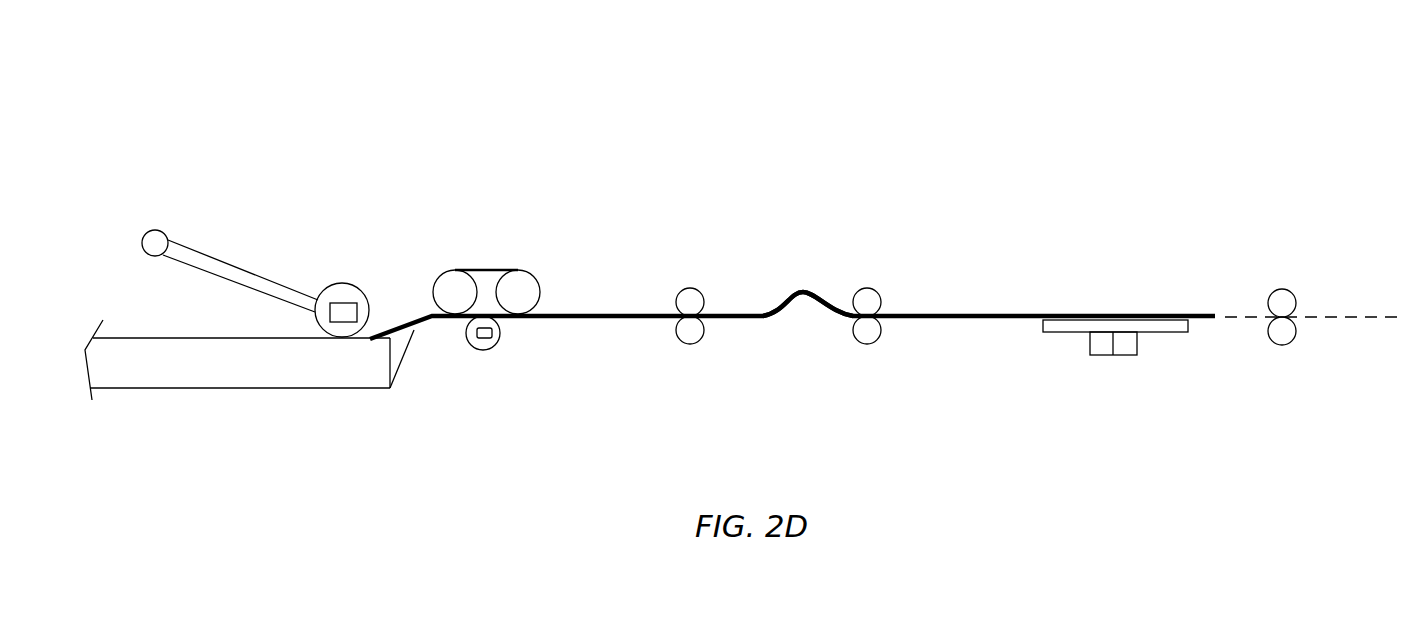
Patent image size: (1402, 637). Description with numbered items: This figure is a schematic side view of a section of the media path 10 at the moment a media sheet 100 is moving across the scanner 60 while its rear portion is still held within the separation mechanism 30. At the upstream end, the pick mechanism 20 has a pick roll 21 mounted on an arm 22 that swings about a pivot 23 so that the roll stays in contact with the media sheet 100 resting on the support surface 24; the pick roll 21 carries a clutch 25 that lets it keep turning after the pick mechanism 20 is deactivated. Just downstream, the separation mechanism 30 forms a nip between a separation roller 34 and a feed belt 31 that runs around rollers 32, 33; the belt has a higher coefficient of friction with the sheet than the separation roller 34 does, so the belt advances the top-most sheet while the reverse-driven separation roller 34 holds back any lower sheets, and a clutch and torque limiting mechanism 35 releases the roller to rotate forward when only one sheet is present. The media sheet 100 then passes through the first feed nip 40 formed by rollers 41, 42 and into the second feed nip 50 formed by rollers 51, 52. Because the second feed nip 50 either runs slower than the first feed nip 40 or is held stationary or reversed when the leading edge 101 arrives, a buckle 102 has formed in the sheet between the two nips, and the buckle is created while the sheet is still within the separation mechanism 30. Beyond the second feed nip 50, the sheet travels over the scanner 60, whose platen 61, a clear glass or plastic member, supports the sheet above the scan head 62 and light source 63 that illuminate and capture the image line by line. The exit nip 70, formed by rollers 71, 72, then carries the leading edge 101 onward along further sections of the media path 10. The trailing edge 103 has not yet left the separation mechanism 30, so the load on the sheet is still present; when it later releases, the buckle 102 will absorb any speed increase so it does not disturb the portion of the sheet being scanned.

The media path 10 is at (1048, 64).
The pick mechanism 20 is at (215, 155).
The pick roll 21 is at (333, 282).
The arm 22 is at (245, 270).
The pivot 23 is at (142, 235).
The support surface 24 is at (307, 388).
The clutch 25 is at (343, 303).
The separation mechanism 30 is at (506, 167).
The feed belt 31 is at (490, 270).
The roller 32 is at (458, 285).
The roller 33 is at (513, 288).
The separation roller 34 is at (488, 350).
The clutch and torque limiting mechanism 35 is at (498, 342).
The first feed nip 40 is at (699, 218).
The roller 41 is at (695, 298).
The roller 42 is at (695, 335).
The second feed nip 50 is at (876, 220).
The roller 51 is at (870, 300).
The roller 52 is at (873, 338).
The scanner 60 is at (1132, 220).
The platen 61 is at (1137, 317).
The scan head 62 is at (1123, 355).
The light source 63 is at (1098, 347).
The exit nip 70 is at (1299, 220).
The roller 71 is at (1288, 302).
The roller 72 is at (1287, 340).
The media sheet 100 is at (256, 377).
The leading edge 101 is at (1215, 318).
The buckle 102 is at (805, 290).
The trailing edge 103 is at (365, 341).